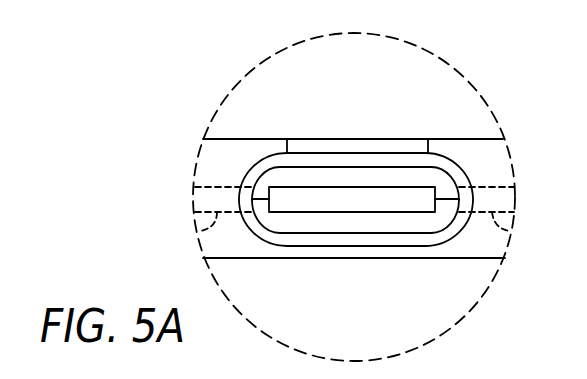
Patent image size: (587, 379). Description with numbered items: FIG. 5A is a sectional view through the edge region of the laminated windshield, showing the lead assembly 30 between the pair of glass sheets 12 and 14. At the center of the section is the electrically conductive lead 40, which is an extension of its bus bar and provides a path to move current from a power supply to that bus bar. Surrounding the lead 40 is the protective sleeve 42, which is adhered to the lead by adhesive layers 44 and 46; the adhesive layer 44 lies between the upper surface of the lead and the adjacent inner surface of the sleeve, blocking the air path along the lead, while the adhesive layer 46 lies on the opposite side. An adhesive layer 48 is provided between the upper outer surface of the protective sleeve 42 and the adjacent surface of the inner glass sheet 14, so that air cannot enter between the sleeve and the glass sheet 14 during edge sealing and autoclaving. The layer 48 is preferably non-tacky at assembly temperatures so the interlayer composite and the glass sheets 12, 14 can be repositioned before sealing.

The glass sheet 12 is at (445, 317).
The inner glass sheet 14 is at (453, 97).
The lead assembly 30 is at (423, 113).
The electrically conductive lead 40 is at (377, 195).
The protective sleeve 42 is at (455, 170).
The adhesive layer 44 is at (308, 183).
The adhesive layer 46 is at (302, 233).
The adhesive layer 48 is at (298, 140).